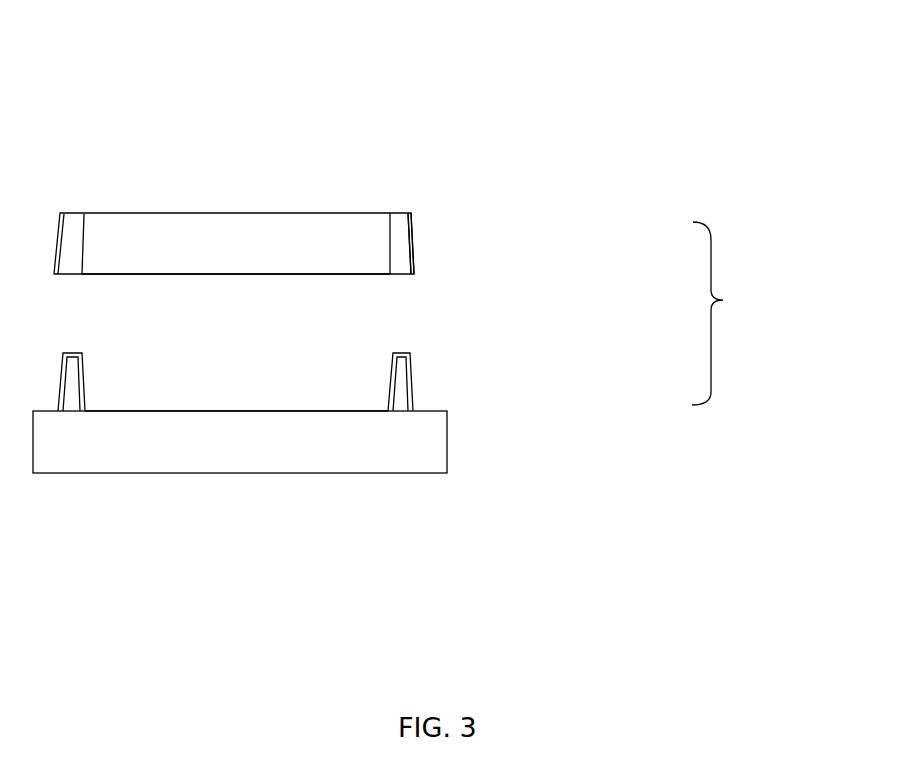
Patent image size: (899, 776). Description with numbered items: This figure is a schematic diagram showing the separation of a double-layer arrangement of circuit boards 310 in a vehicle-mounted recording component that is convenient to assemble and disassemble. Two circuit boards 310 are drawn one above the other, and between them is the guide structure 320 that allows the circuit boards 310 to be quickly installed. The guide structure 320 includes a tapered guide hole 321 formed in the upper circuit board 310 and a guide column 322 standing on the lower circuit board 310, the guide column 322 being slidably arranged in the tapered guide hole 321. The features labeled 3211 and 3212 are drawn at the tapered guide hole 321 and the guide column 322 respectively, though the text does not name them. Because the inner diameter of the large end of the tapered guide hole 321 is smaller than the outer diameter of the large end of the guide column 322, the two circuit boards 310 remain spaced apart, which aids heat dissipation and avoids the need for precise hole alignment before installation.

The circuit board 310 is at (239, 235).
The guide structure 320 is at (761, 313).
The tapered guide hole 321 is at (412, 235).
The groove bottom surface 3211 is at (412, 273).
The guide column 322 is at (410, 372).
The protrusion base surface 3212 is at (412, 412).